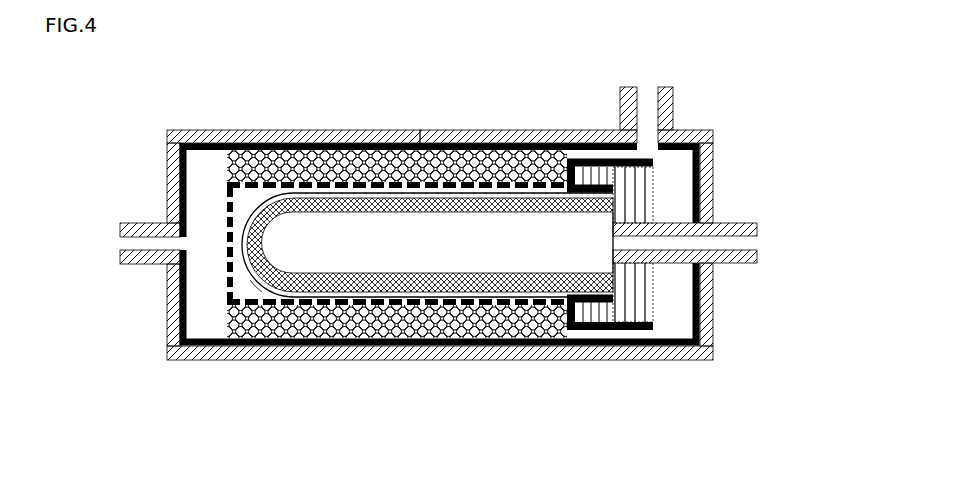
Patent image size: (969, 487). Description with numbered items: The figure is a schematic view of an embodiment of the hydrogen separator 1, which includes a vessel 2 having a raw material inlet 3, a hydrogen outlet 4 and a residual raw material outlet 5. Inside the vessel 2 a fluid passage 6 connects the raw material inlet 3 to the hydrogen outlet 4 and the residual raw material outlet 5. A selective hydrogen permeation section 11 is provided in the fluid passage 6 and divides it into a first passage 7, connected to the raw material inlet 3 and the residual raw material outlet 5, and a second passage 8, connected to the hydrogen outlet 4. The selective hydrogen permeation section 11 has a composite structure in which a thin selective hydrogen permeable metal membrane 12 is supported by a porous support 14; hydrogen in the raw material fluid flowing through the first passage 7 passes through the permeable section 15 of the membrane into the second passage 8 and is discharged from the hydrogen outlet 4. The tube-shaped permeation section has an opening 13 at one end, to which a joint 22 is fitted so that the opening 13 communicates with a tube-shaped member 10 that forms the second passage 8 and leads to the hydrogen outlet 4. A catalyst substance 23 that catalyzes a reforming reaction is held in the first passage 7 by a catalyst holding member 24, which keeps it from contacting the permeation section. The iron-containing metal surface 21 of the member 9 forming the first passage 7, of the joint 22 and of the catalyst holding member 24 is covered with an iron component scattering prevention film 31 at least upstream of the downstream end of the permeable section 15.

The hydrogen separator 1 is at (437, 216).
The vessel 2 is at (437, 227).
The raw material inlet 3 is at (130, 243).
The hydrogen outlet 4 is at (757, 243).
The residual raw material outlet 5 is at (643, 95).
The fluid passage 6 is at (440, 244).
The first passage 7 is at (202, 212).
The second passage 8 is at (720, 226).
The member that forms the first passage 9 is at (228, 130).
The member that forms the second passage 10 is at (700, 263).
The selective hydrogen permeation section 11 is at (262, 284).
The selective hydrogen permeable metal membrane 12 is at (440, 389).
The opening 13 is at (620, 242).
The porous support 14 is at (358, 283).
The permeable section 15 is at (484, 350).
The iron-containing metal surface 21 is at (268, 130).
The joint 22 is at (607, 148).
The catalyst substance 23 is at (388, 130).
The catalyst holding member 24 is at (450, 130).
The iron component scattering prevention film 31 is at (310, 130).